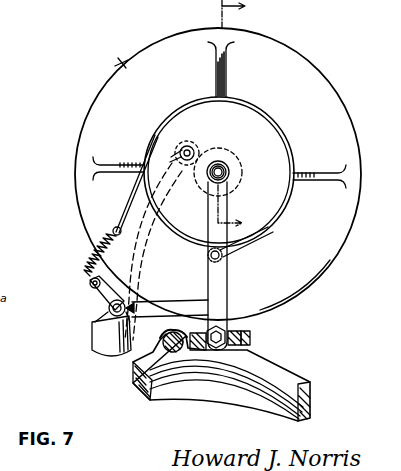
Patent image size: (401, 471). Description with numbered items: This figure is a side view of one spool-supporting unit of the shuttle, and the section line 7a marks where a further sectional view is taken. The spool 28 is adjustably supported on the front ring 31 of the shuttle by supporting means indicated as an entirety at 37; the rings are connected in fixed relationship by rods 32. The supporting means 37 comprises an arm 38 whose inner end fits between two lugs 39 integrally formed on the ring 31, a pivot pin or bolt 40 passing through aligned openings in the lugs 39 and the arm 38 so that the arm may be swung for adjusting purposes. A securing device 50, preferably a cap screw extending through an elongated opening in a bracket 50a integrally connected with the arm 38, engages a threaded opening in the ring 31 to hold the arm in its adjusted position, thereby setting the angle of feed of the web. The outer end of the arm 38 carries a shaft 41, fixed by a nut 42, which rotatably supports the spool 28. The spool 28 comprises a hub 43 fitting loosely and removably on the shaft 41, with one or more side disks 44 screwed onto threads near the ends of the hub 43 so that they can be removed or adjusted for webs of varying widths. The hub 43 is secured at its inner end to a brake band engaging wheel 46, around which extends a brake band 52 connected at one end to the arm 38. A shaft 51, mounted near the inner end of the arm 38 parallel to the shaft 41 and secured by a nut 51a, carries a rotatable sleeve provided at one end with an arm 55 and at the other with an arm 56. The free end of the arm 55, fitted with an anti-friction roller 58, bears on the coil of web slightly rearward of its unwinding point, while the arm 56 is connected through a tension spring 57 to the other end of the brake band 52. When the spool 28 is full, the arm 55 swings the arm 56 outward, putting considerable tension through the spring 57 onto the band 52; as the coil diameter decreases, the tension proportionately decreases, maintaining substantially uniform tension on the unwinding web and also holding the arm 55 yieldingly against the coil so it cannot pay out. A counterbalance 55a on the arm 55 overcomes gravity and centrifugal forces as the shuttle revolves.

The section line 7a is at (241, 113).
The spool 28 is at (221, 174).
The ring 31 is at (297, 367).
The rod 32 is at (172, 353).
The supporting means 37 is at (291, 285).
The arm 38 is at (218, 279).
The lug 39 is at (233, 353).
The pivot pin or bolt 40 is at (252, 338).
The shaft 41 is at (230, 170).
The nut 42 is at (210, 180).
The hub 43 is at (231, 146).
The side plate or disk 44 is at (106, 61).
The brake band engaging wheel 46 is at (263, 124).
The securing device 50 is at (227, 322).
The bracket 50a is at (212, 322).
The shaft 51 is at (108, 312).
The nut 51a is at (92, 326).
The brake band 52 is at (131, 190).
The arm 55 is at (138, 254).
The counterbalance 55a is at (92, 345).
The arm 56 is at (97, 291).
The tension spring 57 is at (104, 256).
The anti-friction roller 58 is at (188, 140).